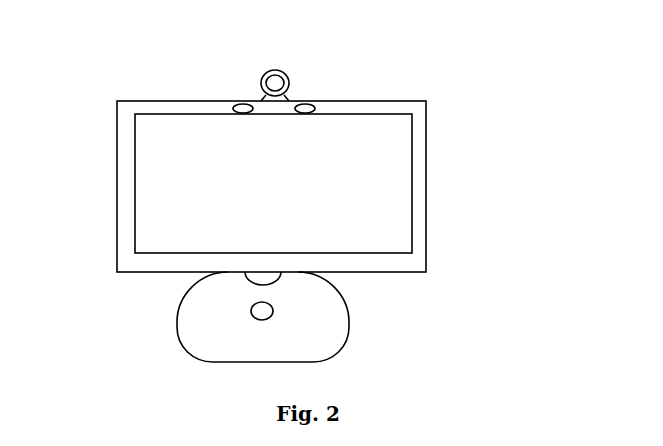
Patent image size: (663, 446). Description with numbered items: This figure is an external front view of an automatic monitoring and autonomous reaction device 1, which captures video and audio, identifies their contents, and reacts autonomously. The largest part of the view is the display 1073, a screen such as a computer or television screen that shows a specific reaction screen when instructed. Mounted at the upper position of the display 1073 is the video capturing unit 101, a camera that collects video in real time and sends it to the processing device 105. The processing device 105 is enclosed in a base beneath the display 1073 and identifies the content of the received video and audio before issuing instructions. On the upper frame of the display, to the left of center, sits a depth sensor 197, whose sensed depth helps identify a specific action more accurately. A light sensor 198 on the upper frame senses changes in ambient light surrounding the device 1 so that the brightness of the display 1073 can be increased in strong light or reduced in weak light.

The automatic monitoring and autonomous reaction device 1 is at (428, 133).
The video capturing unit 101 is at (284, 74).
The processing device 105 is at (323, 330).
The depth sensor 197 is at (230, 101).
The light sensor 198 is at (310, 101).
The display 1073 is at (400, 202).